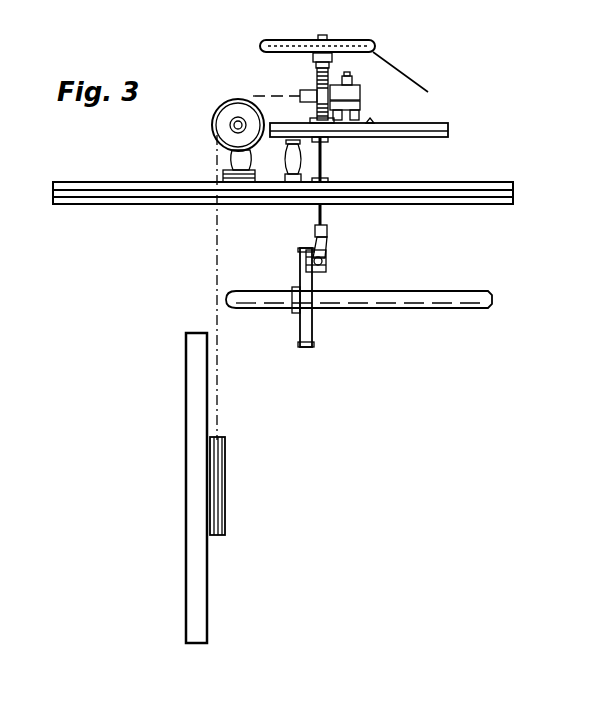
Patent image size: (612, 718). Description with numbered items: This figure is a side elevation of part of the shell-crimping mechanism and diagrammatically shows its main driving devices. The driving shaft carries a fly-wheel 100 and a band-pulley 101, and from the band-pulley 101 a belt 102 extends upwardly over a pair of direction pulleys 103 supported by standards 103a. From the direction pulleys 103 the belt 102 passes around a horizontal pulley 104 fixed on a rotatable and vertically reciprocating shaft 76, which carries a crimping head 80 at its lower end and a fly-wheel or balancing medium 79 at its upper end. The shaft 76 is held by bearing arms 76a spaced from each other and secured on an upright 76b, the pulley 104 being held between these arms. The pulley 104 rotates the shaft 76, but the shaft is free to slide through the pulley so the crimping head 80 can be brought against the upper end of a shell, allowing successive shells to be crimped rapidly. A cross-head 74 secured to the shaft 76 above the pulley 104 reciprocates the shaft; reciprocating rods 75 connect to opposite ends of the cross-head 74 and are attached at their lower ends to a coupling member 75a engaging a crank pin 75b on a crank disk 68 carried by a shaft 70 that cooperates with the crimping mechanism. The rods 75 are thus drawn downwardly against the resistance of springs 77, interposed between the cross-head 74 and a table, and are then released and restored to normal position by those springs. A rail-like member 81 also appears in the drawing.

The cross-head 74 is at (345, 40).
The shaft 76 is at (313, 72).
The bearing arms 76a is at (361, 92).
The upright 76b is at (361, 106).
The springs 77 is at (329, 74).
The fly-wheel or balancing medium 79 is at (411, 87).
The horizontal pulley 104 is at (302, 92).
The direction pulleys 103 is at (226, 114).
The standards 103a is at (232, 160).
The crimping head 80 is at (332, 140).
The reciprocating rods 75 is at (322, 166).
The rail 81 is at (498, 182).
The coupling member 75a is at (330, 232).
The crank pin 75b is at (305, 262).
The shaft 70 is at (400, 293).
The crank disk 68 is at (312, 335).
The belt 102 is at (215, 302).
The fly-wheel 100 is at (200, 390).
The band-pulley 101 is at (226, 450).